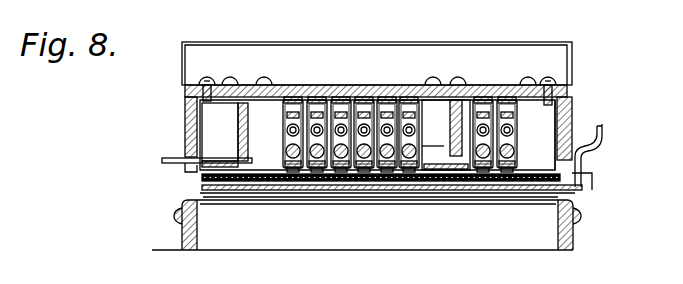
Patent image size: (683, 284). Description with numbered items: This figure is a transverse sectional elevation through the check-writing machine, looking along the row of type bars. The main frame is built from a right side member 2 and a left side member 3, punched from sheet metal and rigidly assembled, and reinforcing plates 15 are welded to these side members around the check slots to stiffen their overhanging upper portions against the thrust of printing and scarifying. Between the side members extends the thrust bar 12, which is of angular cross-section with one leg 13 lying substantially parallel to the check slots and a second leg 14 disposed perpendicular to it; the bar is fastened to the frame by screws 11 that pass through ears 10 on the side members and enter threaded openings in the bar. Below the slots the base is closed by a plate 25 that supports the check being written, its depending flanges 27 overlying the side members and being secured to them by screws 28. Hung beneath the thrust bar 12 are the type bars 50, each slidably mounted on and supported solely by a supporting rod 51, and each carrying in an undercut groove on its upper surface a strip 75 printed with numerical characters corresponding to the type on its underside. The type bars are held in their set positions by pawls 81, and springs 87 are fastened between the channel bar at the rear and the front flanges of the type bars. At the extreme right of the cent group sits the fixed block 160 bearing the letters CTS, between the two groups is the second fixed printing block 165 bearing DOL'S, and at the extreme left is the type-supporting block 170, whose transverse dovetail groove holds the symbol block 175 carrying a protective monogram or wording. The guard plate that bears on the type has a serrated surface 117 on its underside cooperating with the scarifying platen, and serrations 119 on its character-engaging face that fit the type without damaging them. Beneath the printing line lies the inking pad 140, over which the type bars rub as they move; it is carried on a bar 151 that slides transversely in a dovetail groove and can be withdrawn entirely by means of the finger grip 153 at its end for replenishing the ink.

The right side member 2 is at (574, 246).
The left side member 3 is at (185, 246).
The ear 10 is at (223, 82).
The screw 11 is at (209, 77).
The thrust bar 12 is at (392, 60).
The leg of thrust bar 13 is at (380, 88).
The second leg of thrust bar 14 is at (362, 43).
The reinforcing plate 15 is at (184, 113).
The plate 25 is at (200, 202).
The depending flange 27 is at (183, 228).
The screw 28 is at (173, 215).
The type bar 50 is at (336, 95).
The supporting rod 51 is at (285, 151).
The strip 75 is at (300, 95).
The pawl 81 is at (287, 115).
The spring 87 is at (285, 130).
The serrated surface 117 is at (436, 190).
The serrations 119 is at (506, 190).
The inking pad 140 is at (197, 175).
The bar 151 is at (200, 178).
The finger grip 153 is at (604, 140).
The fixed block 160 is at (573, 118).
The second fixed printing block 165 is at (446, 135).
The type-supporting block 170 is at (225, 135).
The symbol block 175 is at (183, 158).